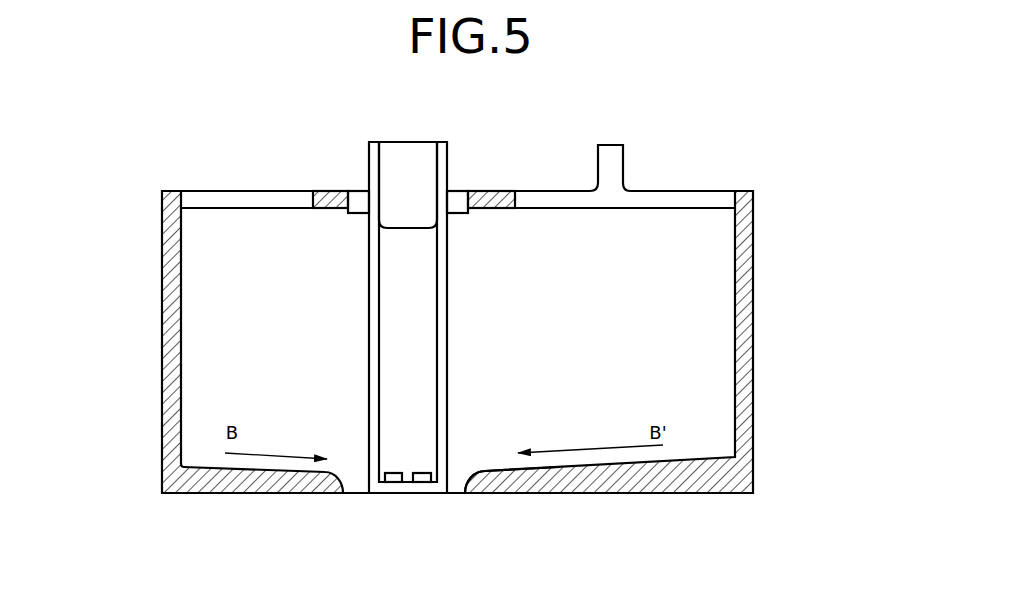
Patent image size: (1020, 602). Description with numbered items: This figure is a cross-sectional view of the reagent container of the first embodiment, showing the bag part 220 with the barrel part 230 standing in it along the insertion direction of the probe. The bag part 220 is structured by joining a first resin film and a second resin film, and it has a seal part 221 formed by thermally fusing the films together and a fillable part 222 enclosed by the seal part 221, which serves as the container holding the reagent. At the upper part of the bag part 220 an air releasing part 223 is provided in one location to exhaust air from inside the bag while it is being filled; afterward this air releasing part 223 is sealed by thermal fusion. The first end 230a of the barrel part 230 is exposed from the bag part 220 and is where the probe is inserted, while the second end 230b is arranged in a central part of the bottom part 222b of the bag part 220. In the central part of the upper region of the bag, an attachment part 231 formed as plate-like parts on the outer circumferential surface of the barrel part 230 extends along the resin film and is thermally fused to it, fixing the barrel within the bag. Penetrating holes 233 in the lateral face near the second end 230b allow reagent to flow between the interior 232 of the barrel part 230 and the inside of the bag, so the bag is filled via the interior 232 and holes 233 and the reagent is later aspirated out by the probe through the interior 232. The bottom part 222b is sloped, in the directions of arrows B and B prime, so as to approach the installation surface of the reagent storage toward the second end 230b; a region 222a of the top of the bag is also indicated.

The bag part 220 is at (529, 331).
The seal part 221 is at (755, 415).
The fillable part 222 is at (705, 440).
The top plate 222a is at (682, 198).
The bottom part 222b is at (502, 485).
The air releasing part 223 is at (607, 152).
The barrel part 230 is at (550, 330).
The first end 230a is at (368, 155).
The second end 230b is at (377, 495).
The attachment part 231 is at (330, 203).
The interior 232 is at (412, 258).
The penetrating holes 233 is at (393, 477).